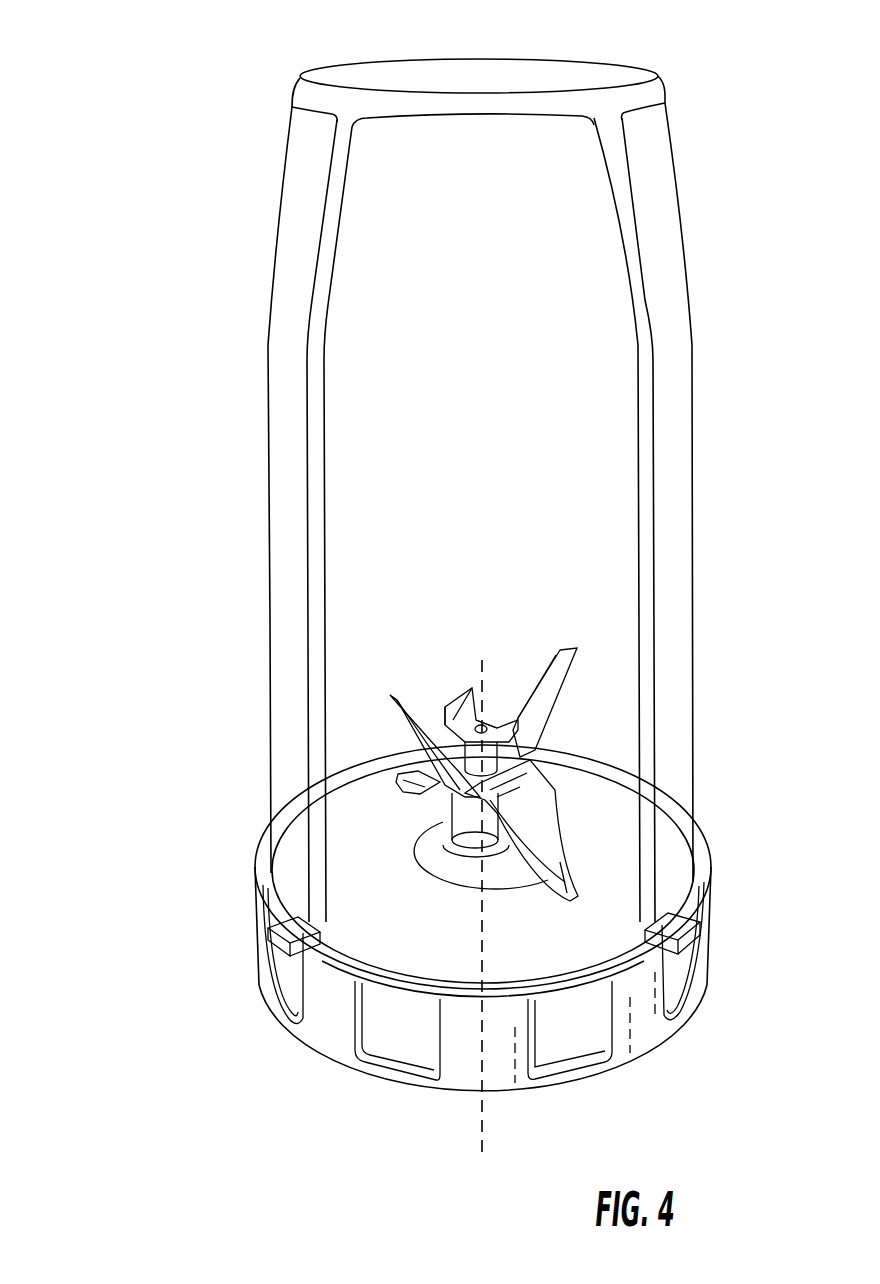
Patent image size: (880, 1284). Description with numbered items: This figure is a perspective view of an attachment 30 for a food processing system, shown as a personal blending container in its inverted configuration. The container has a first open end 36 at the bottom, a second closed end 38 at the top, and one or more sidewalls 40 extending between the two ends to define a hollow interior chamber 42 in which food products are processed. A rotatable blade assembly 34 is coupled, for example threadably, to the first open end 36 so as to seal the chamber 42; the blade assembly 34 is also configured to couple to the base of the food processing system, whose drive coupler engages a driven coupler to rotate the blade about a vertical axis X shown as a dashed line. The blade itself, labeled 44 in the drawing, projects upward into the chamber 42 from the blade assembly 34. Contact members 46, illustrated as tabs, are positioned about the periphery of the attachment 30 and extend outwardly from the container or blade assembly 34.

The attachment 30 is at (130, 293).
The rotatable blade assembly 34 is at (690, 992).
The first open end 36 is at (362, 965).
The second closed end 38 is at (508, 80).
The sidewall 40 is at (668, 490).
The hollow interior chamber 42 is at (368, 532).
The blade assembly 44 is at (538, 727).
The contact members 46 is at (275, 940).